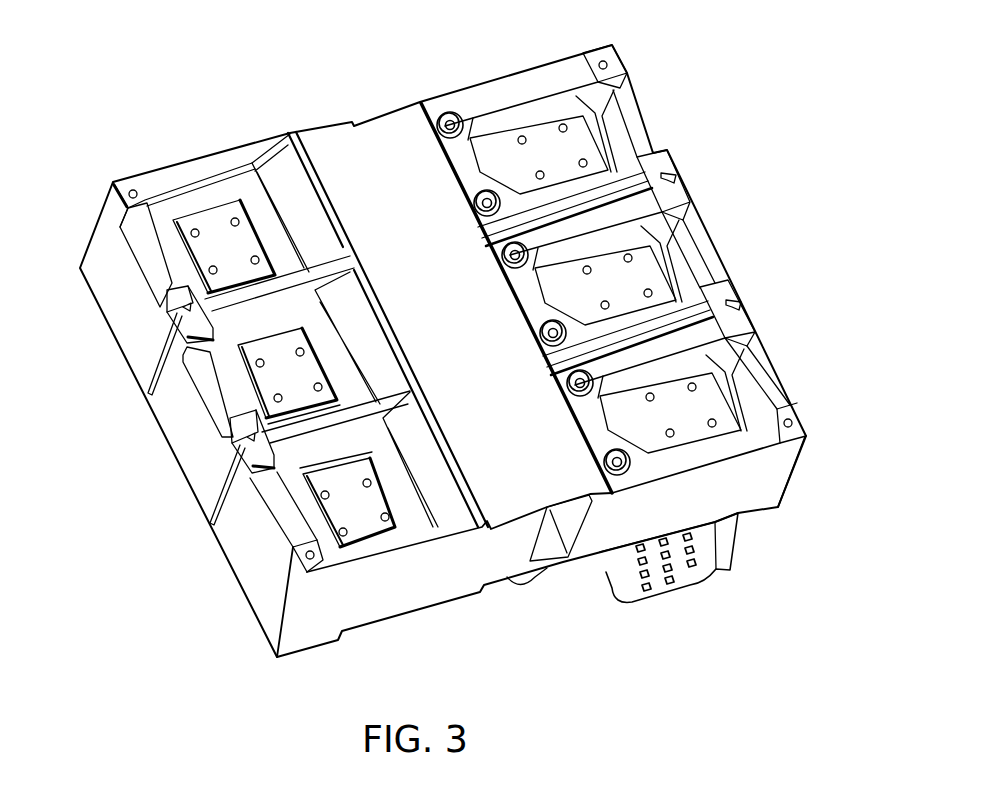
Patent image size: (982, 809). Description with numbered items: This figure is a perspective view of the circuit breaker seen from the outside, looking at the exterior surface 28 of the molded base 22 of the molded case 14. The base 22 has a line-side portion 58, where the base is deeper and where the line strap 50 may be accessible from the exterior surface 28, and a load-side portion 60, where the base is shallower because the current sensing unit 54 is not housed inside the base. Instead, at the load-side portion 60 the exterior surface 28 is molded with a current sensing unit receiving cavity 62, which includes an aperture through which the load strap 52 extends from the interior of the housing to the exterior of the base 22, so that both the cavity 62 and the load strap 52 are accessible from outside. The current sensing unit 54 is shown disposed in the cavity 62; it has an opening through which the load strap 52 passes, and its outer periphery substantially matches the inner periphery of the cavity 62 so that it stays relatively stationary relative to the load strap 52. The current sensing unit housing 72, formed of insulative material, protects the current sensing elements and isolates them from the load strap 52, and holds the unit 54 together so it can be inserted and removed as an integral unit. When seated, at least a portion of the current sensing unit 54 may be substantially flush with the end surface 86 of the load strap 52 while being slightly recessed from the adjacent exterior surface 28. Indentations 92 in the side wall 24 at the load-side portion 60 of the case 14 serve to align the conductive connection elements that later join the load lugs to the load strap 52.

The molded case 14 is at (763, 497).
The molded base 22 is at (560, 477).
The walls 24 is at (195, 437).
The exterior surface 28 is at (376, 152).
The line strap 50 is at (712, 402).
The load strap 52 is at (340, 517).
The current sensing unit 54 is at (272, 170).
The line-side portion 58 is at (533, 105).
The load-side portion 60 is at (167, 183).
The current sensing unit receiving cavity 62 is at (280, 452).
The current sensing unit housing 72 is at (175, 258).
The end surface 86 is at (306, 385).
The indentations 92 is at (210, 390).